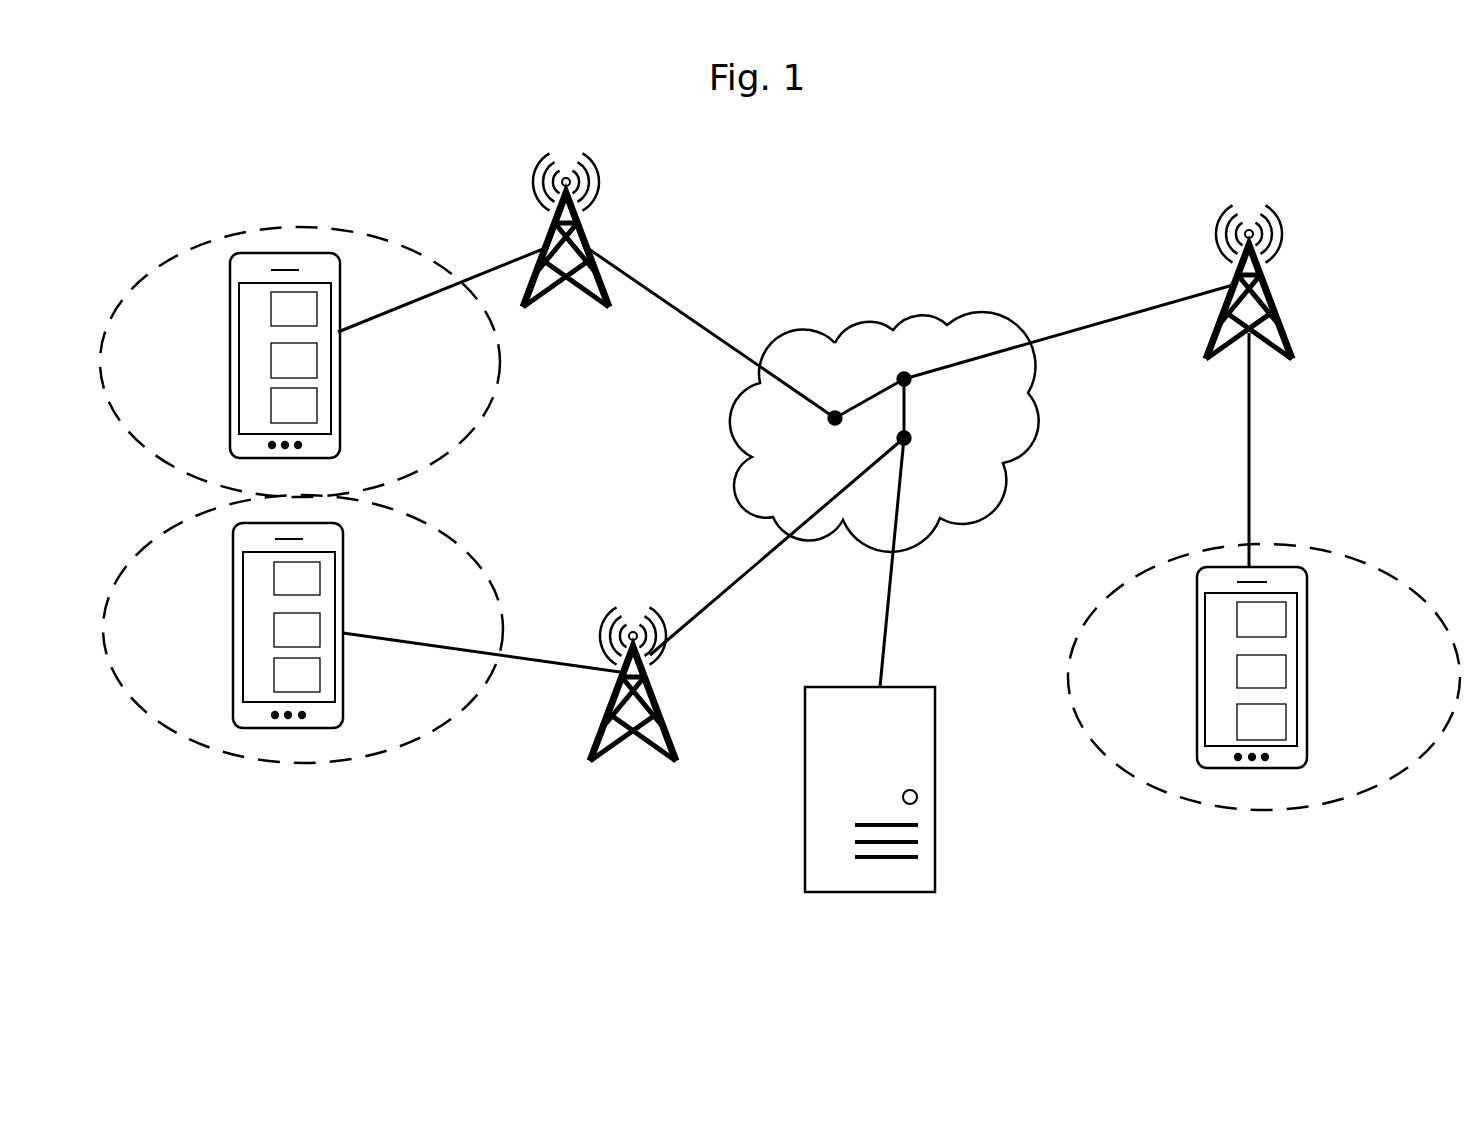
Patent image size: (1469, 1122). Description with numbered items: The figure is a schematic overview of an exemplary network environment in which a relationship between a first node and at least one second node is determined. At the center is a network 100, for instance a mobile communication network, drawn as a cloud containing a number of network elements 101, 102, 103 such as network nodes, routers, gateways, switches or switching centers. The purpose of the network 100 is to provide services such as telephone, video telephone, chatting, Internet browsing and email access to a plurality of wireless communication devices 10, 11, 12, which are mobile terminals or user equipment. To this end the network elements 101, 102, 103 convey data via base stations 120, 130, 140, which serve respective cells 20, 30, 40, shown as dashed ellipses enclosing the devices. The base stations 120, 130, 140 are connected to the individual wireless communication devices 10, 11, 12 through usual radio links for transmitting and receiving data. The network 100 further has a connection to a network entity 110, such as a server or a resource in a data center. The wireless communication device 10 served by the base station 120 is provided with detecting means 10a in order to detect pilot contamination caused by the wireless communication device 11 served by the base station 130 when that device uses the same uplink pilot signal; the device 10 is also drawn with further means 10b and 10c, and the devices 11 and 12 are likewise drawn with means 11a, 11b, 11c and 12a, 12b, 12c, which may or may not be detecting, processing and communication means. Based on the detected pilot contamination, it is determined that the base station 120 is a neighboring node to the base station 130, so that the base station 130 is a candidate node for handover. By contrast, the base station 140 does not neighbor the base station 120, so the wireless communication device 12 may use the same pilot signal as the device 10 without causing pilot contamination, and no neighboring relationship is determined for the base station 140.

The wireless communication device 10 is at (285, 355).
The detecting means 10a is at (270, 308).
The application of first user terminal 10b is at (270, 360).
The application of first user terminal 10c is at (270, 405).
The wireless communication device 11 is at (292, 625).
The application of second user terminal 11a is at (272, 577).
The application of second user terminal 11b is at (272, 630).
The application of second user terminal 11c is at (287, 675).
The wireless communication device 12 is at (1265, 667).
The application of third user terminal 12a is at (1285, 618).
The application of third user terminal 12b is at (1285, 672).
The application of third user terminal 12c is at (1285, 723).
The cell 20 is at (228, 235).
The cell 30 is at (218, 752).
The cell 40 is at (1355, 553).
The network 100 is at (963, 523).
The network element 101 is at (832, 412).
The network element 102 is at (913, 442).
The network element 103 is at (912, 382).
The network entity 110 is at (935, 843).
The base station 120 is at (568, 287).
The base station 130 is at (633, 740).
The base station 140 is at (1290, 357).